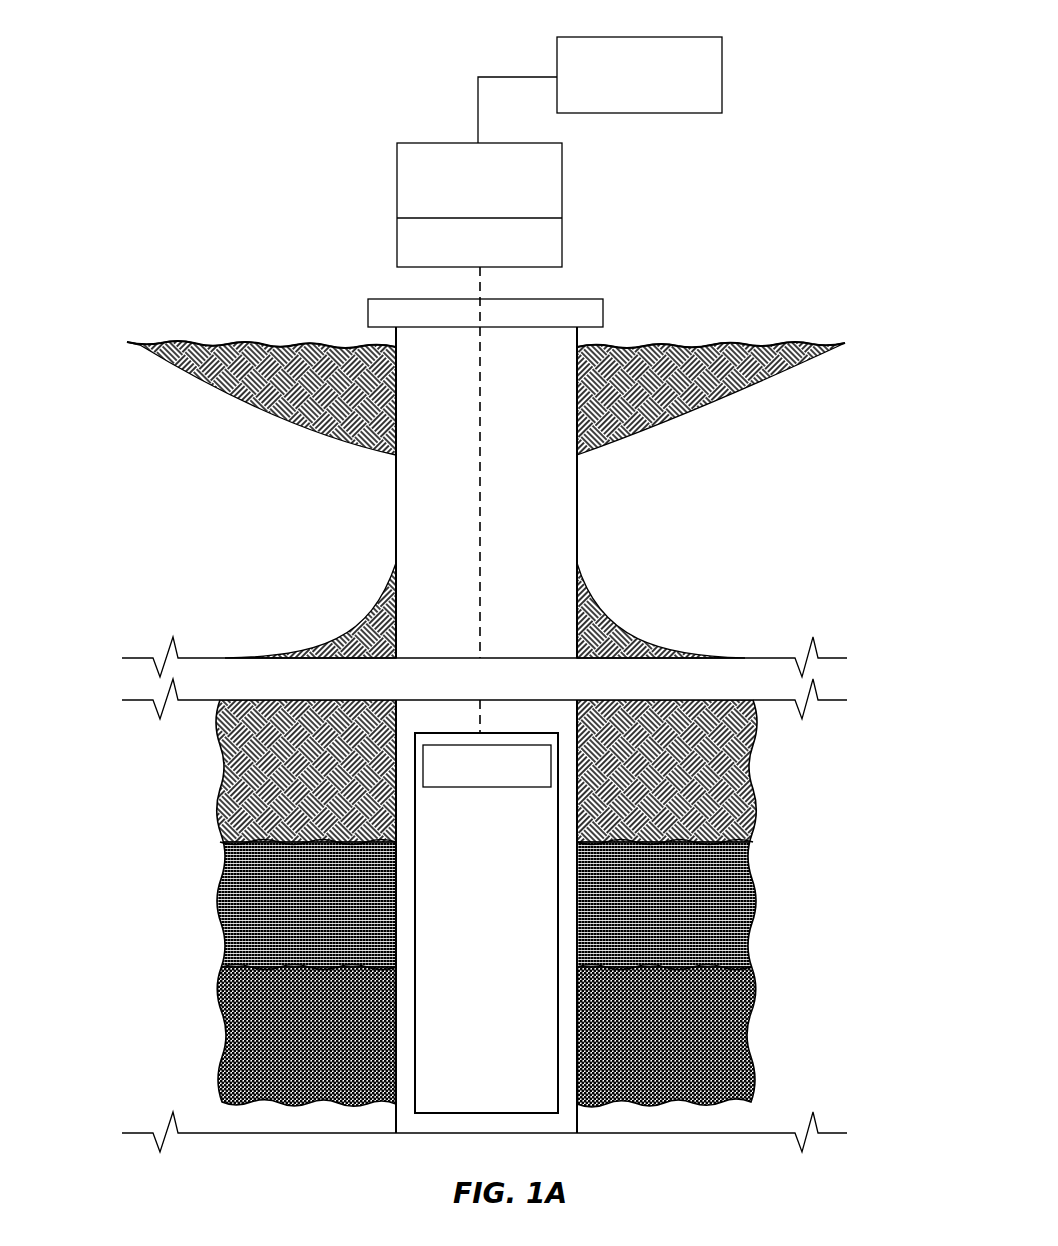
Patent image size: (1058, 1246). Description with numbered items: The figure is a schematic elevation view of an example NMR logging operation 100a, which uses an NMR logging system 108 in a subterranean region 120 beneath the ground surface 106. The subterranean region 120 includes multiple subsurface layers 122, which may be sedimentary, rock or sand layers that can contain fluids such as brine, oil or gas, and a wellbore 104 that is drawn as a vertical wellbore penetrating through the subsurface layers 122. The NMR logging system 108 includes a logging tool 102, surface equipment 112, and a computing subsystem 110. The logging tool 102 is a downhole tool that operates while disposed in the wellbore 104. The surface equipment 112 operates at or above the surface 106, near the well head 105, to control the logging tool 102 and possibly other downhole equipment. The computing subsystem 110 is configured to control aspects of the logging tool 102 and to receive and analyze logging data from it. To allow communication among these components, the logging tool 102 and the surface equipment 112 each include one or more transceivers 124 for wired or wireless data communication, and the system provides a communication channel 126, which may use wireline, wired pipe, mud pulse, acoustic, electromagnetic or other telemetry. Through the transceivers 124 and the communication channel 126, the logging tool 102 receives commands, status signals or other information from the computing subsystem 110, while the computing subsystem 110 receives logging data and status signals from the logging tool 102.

The NMR logging operation 100a is at (277, 157).
The logging tool 102 is at (515, 931).
The wellbore 104 is at (396, 512).
The well head 105 is at (368, 313).
The ground surface 106 is at (722, 343).
The NMR logging system 108 is at (770, 220).
The computing subsystem 110 is at (638, 37).
The surface equipment 112 is at (445, 143).
The subterranean region 120 is at (203, 917).
The subsurface layers 122 is at (753, 773).
The transceivers 124 is at (563, 243).
The communication channel 126 is at (480, 485).